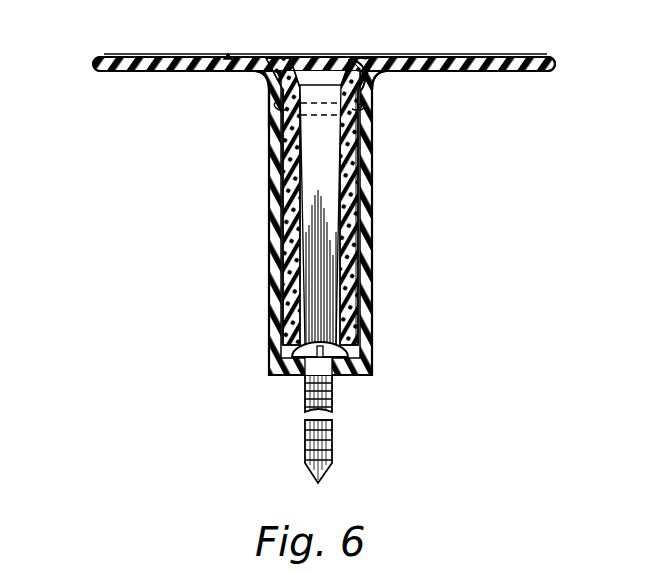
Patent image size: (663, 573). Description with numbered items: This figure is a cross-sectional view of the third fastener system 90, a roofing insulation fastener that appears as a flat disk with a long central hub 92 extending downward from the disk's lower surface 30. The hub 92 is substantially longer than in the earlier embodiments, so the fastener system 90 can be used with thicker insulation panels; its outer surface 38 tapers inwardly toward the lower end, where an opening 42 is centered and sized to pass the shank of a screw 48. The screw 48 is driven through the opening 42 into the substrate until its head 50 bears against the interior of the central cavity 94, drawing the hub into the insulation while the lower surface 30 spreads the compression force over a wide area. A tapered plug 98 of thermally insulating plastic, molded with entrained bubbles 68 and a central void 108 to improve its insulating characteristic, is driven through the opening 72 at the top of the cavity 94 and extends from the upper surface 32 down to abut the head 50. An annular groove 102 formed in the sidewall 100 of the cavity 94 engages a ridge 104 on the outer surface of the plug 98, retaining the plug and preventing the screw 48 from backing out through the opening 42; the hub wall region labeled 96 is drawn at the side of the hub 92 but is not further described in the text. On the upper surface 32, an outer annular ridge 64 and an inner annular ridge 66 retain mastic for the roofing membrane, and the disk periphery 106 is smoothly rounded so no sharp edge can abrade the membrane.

The lower surface 30 is at (155, 72).
The upper surface 32 is at (187, 55).
The outer surface of hub 38 is at (268, 128).
The opening 42 is at (332, 380).
The screw 48 is at (305, 405).
The head of screw 50 is at (340, 350).
The outer annular ridge 64 is at (127, 55).
The inner annular ridge 66 is at (229, 55).
The bubbles 68 is at (352, 172).
The opening 72 is at (357, 57).
The third fastener system 90 is at (263, 241).
The central hub 92 is at (269, 250).
The central cavity 94 is at (288, 296).
The outer wall 96 is at (270, 205).
The tapered plug 98 is at (352, 222).
The sidewall of cavity 100 is at (368, 58).
The annular groove 102 is at (364, 108).
The ridge 104 is at (362, 101).
The smoothly rounded periphery 106 is at (550, 55).
The central void 108 is at (318, 296).